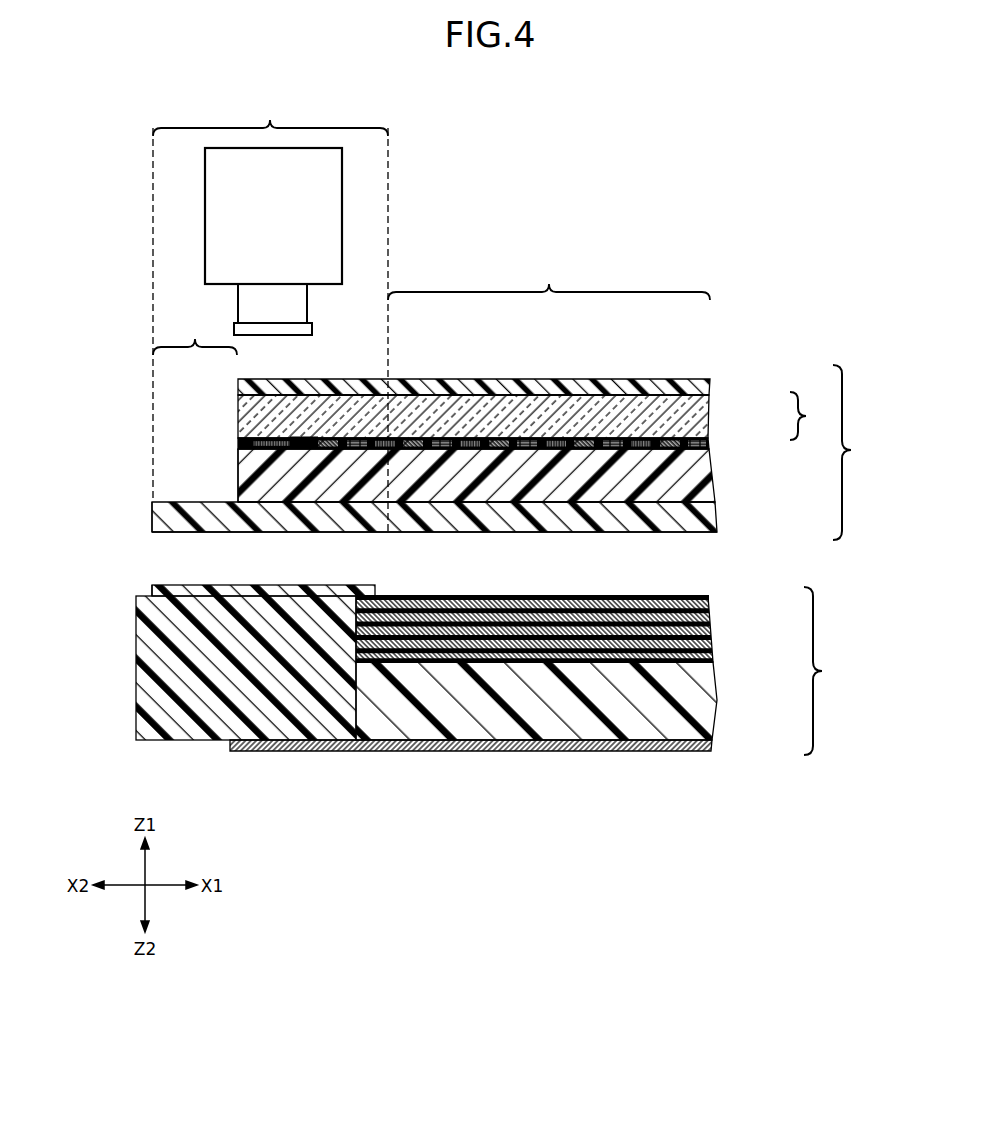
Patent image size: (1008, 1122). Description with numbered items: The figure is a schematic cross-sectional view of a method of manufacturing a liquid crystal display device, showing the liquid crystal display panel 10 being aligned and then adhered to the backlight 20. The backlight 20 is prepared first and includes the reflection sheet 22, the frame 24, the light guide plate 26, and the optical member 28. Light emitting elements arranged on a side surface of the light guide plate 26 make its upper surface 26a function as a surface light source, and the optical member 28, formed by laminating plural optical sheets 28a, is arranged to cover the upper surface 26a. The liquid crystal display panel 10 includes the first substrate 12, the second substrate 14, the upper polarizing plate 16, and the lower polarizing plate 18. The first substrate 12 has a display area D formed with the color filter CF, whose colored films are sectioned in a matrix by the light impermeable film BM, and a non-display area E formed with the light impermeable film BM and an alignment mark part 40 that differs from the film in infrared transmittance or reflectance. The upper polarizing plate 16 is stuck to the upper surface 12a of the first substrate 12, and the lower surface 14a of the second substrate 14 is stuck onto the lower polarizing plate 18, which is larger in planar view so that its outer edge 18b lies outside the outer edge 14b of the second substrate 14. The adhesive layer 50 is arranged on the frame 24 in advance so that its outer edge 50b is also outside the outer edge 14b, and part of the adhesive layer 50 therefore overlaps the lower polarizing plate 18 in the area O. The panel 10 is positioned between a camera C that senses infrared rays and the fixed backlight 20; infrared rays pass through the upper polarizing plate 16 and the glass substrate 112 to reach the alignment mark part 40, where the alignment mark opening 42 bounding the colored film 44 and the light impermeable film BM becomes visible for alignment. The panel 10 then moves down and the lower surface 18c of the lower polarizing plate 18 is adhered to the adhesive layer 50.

The liquid crystal display panel 10 is at (857, 452).
The first substrate 12 is at (813, 416).
The upper surface of the first substrate 12a is at (542, 394).
The glass substrate 112 is at (705, 416).
The color filter CF is at (711, 444).
The second substrate 14 is at (711, 494).
The lower surface of the second substrate 14a is at (567, 503).
The outer edge of the second substrate 14b is at (238, 481).
The upper polarizing plate 16 is at (706, 387).
The lower polarizing plate 18 is at (713, 527).
The outer edge of the lower polarizing plate 18b is at (152, 512).
The lower surface of the lower polarizing plate 18c is at (515, 533).
The backlight 20 is at (830, 671).
The reflection sheet 22 is at (232, 746).
The frame 24 is at (143, 684).
The light guide plate 26 is at (705, 716).
The upper surface of the light guide plate 26a is at (420, 658).
The optical member 28 is at (679, 629).
The optical sheets 28a is at (700, 650).
The alignment mark part 40 is at (276, 438).
The alignment mark opening 42 is at (254, 440).
The colored film 44 is at (292, 440).
The adhesive layer 50 is at (220, 590).
The outer edge of the adhesive layer 50b is at (152, 590).
The light impermeable film BM is at (313, 443).
The camera C is at (211, 186).
The display area D is at (549, 279).
The non-display area E is at (270, 113).
The area outside the outer edge of the second substrate O is at (195, 333).